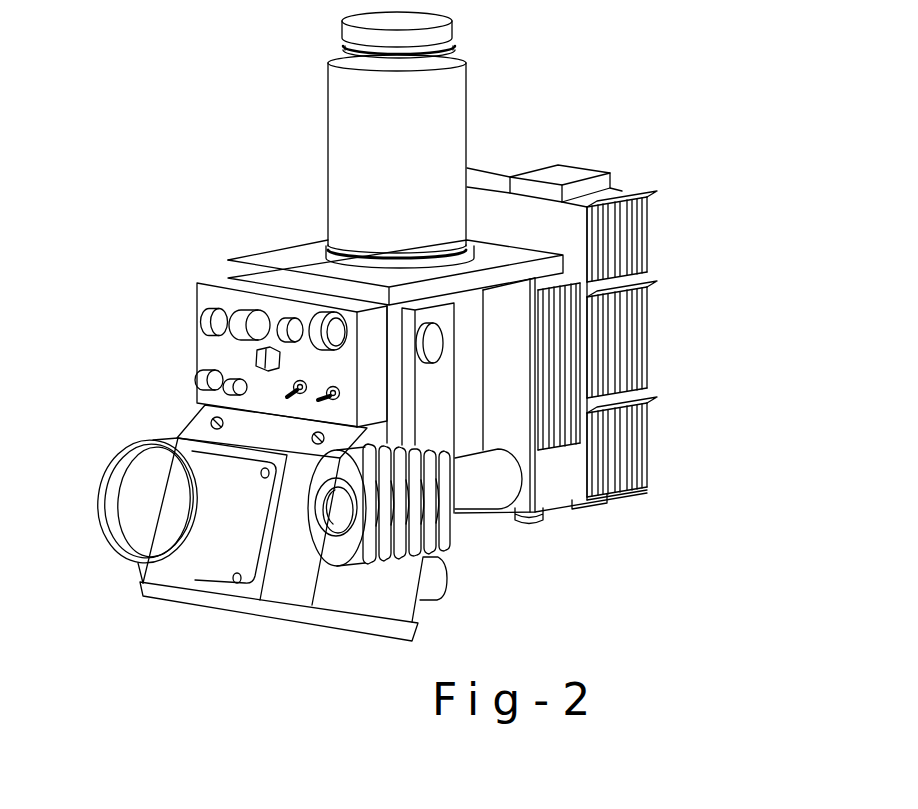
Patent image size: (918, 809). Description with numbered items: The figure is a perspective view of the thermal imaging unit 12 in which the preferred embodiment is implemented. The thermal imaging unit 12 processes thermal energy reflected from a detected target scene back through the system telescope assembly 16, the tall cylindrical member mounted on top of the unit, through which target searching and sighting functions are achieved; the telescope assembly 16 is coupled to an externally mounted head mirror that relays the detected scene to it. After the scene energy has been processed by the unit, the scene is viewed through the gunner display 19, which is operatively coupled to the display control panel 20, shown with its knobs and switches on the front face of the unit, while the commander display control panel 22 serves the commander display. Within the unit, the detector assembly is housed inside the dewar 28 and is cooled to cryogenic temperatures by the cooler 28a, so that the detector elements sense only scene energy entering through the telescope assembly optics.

The thermal imaging unit 12 is at (694, 203).
The system telescope assembly 16 is at (455, 105).
The gunner display 19 is at (150, 470).
The display control panel 20 is at (212, 350).
The commander display control panel 22 is at (245, 351).
The dewar 28 is at (334, 517).
The cooler 28a is at (485, 482).